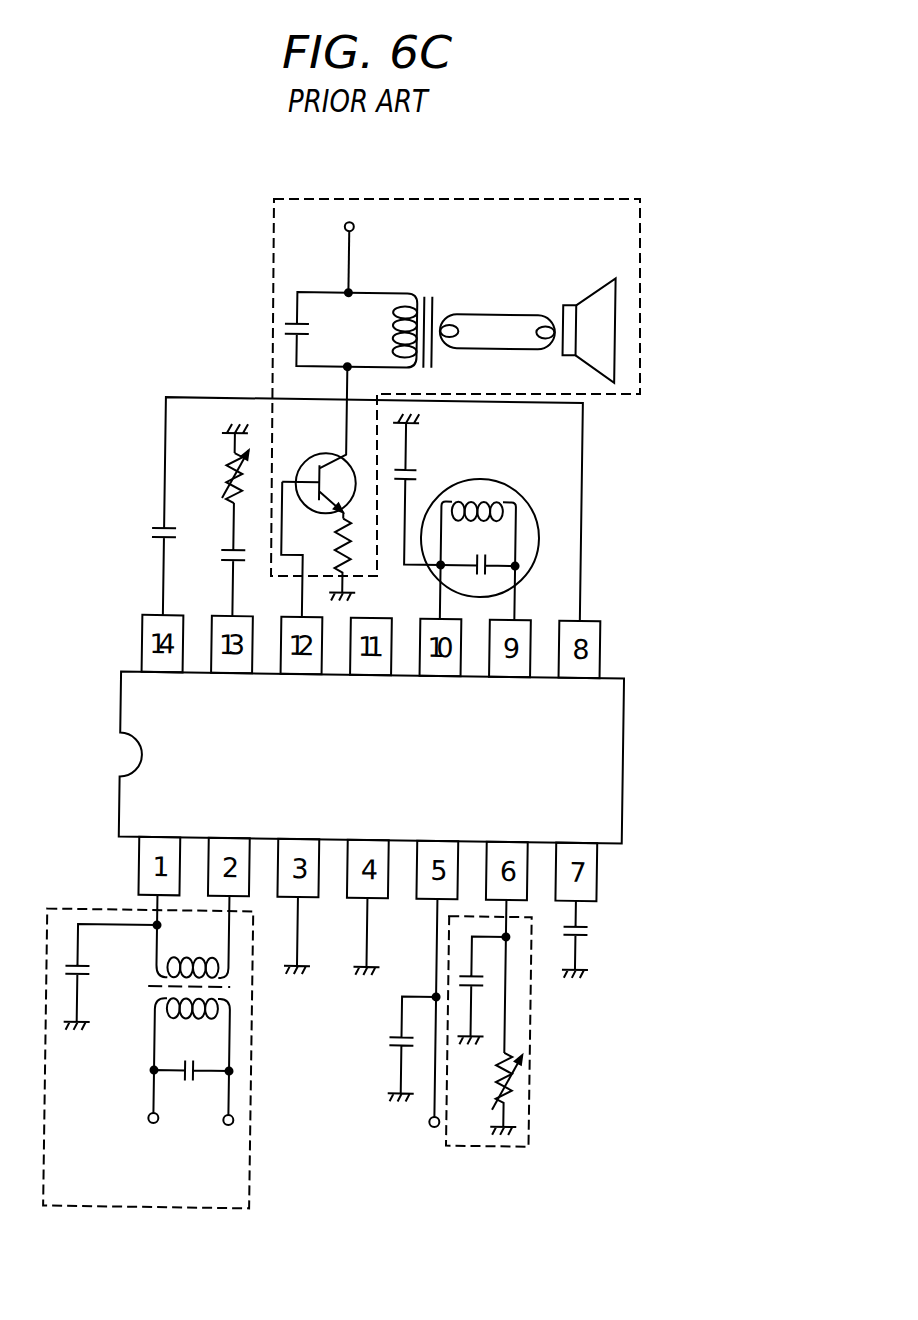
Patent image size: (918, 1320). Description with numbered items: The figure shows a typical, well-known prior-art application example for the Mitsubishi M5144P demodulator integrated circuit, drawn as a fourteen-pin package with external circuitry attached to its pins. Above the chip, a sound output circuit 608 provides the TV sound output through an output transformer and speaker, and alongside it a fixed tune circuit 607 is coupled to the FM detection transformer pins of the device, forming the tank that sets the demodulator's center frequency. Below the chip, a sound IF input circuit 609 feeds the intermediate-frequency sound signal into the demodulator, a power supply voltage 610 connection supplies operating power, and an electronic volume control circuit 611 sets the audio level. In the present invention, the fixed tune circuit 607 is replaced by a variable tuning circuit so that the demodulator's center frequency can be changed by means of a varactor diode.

The fixed tune circuit 607 is at (471, 474).
The sound output circuit 608 is at (556, 195).
The sound IF input circuit 609 is at (148, 1216).
The power supply voltage 610 is at (442, 1127).
The electronic volume control circuit 611 is at (484, 1146).